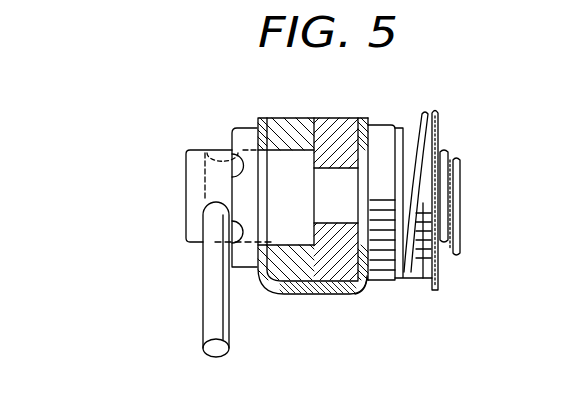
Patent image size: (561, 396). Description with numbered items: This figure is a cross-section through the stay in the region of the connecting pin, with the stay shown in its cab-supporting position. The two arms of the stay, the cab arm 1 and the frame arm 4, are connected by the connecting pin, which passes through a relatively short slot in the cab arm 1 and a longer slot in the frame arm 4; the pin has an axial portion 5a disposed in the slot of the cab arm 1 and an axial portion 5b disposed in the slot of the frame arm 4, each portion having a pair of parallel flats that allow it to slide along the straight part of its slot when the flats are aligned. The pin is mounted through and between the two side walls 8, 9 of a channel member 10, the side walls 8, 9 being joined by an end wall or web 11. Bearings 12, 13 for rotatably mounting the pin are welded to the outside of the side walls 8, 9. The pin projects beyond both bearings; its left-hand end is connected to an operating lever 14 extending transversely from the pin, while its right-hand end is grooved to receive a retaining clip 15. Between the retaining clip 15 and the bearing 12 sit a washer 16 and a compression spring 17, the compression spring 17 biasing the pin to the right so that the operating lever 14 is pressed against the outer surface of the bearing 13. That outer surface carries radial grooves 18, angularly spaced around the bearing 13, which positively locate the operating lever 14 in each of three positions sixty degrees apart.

The cab arm 1 is at (333, 183).
The frame arm 4 is at (300, 125).
The axial portion of the pin 5a is at (313, 172).
The axial portion of the pin 5b is at (300, 201).
The side wall 8 is at (370, 121).
The side wall 9 is at (258, 118).
The channel member 10 is at (293, 299).
The end wall or web 11 is at (368, 274).
The bearing 12 is at (383, 278).
The bearing 13 is at (230, 135).
The operating lever 14 is at (210, 305).
The retaining clip 15 is at (443, 149).
The washer 16 is at (437, 288).
The compression spring 17 is at (425, 110).
The radial grooves 18 is at (220, 160).